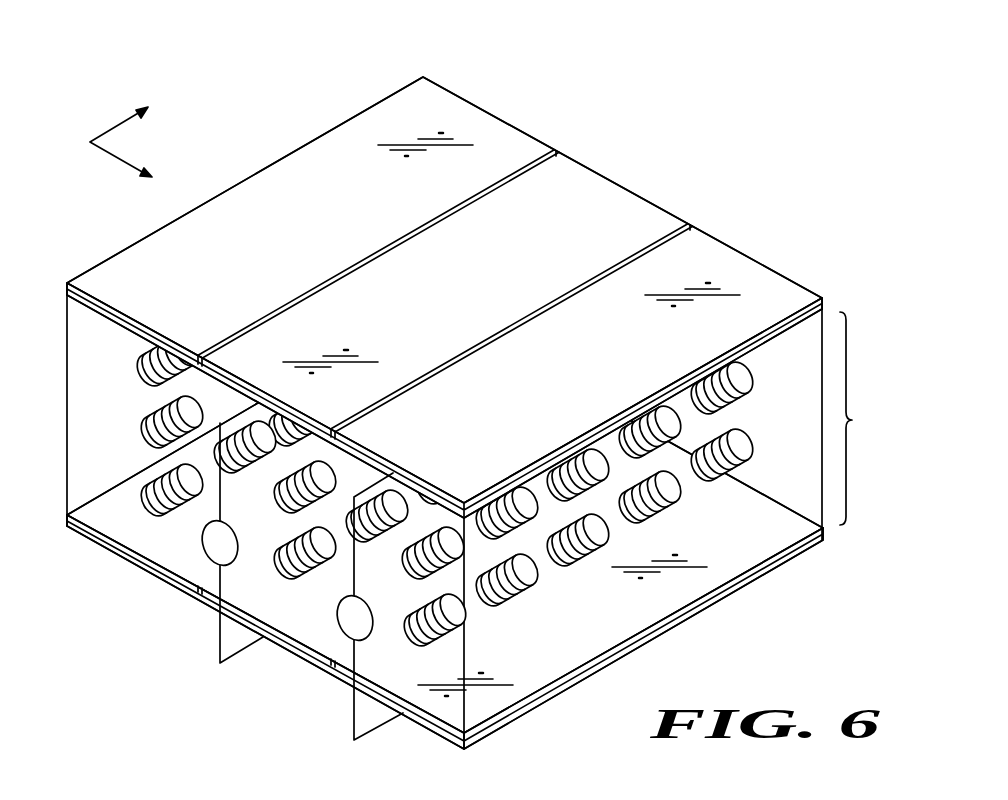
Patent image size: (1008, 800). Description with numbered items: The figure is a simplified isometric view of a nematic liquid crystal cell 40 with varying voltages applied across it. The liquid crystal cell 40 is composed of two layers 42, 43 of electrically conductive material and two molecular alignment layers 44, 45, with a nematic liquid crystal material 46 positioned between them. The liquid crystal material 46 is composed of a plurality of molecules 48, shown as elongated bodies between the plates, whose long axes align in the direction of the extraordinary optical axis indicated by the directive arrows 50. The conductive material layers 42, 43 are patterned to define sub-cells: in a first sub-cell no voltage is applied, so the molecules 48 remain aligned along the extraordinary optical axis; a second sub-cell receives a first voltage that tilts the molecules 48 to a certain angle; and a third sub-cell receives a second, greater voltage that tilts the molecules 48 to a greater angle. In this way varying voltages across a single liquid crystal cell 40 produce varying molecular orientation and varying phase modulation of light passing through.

The liquid crystal cell 40 is at (478, 413).
The layer of electrically conductive material 42 is at (757, 579).
The layer of electrically conductive material 43 is at (758, 262).
The molecular alignment layer 44 is at (823, 530).
The molecular alignment layer 45 is at (826, 309).
The nematic liquid crystal material 46 is at (478, 516).
The molecules 48 is at (143, 430).
The directive arrows 50 is at (82, 113).